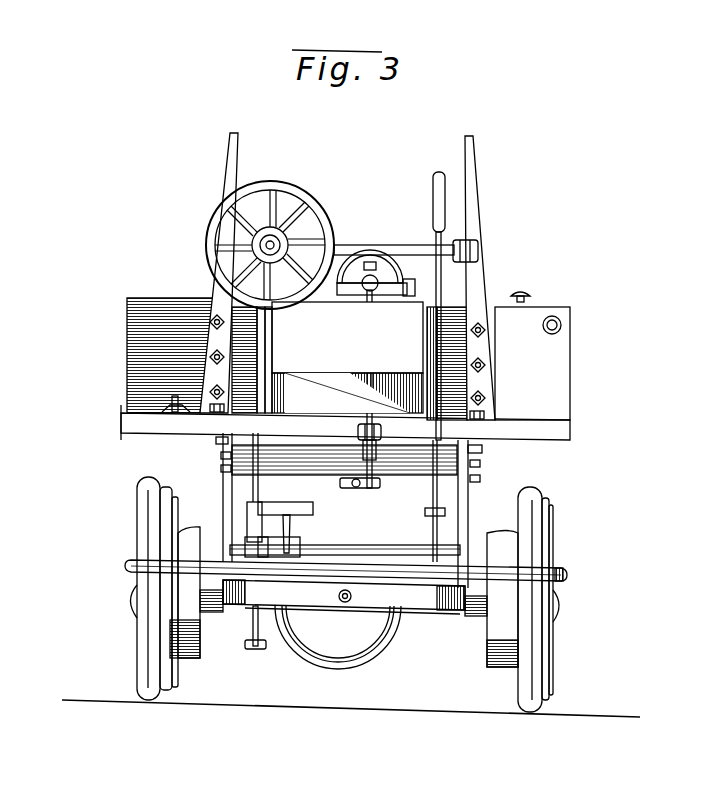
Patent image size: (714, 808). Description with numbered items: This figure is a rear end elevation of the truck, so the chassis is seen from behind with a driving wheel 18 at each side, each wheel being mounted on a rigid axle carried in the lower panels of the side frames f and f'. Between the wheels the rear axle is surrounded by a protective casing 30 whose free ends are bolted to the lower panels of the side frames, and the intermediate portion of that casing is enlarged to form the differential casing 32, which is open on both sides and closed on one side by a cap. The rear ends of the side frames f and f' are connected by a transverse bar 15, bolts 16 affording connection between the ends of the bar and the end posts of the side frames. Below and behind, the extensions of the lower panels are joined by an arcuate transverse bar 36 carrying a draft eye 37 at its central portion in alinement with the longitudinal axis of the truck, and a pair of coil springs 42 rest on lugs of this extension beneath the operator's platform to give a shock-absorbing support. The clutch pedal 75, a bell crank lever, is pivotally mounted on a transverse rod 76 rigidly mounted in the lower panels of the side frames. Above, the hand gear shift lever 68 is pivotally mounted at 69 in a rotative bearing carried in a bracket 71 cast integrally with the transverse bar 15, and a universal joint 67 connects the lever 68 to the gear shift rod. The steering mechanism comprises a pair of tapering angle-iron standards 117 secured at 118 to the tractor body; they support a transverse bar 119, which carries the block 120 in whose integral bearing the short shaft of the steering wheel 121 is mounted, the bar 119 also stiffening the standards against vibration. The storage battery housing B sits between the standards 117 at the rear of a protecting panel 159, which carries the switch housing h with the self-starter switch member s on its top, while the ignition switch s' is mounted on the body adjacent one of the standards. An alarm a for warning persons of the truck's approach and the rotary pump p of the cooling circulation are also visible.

The standards 117 is at (232, 188).
The securing point of the standards 118 is at (230, 412).
The transverse bar 119 is at (392, 238).
The block 120 is at (250, 246).
The steering wheel 121 is at (215, 268).
The protecting panel 159 is at (127, 338).
The storage battery housing B is at (347, 357).
The alarm a is at (385, 282).
The hand gear shift lever 68 is at (372, 334).
The pivot of the hand gear shift lever 69 is at (358, 431).
The bracket 71 is at (378, 446).
The universal joint 67 is at (356, 487).
The switch housing h is at (532, 363).
The switch member s is at (536, 294).
The ignition switch s' is at (145, 414).
The side frame f is at (201, 448).
The side frame f' is at (488, 463).
The bolts 16 is at (221, 456).
The transverse bar 15 is at (412, 462).
The pedal 75 is at (288, 508).
The transverse rod 76 is at (378, 548).
The rotary pump p is at (128, 566).
The arcuate transverse bar 36 is at (344, 597).
The draft eye 37 is at (351, 596).
The differential casing 32 is at (338, 637).
The protective casing 30 is at (237, 627).
The coil springs 42 is at (448, 608).
The driving wheels 18 is at (128, 640).